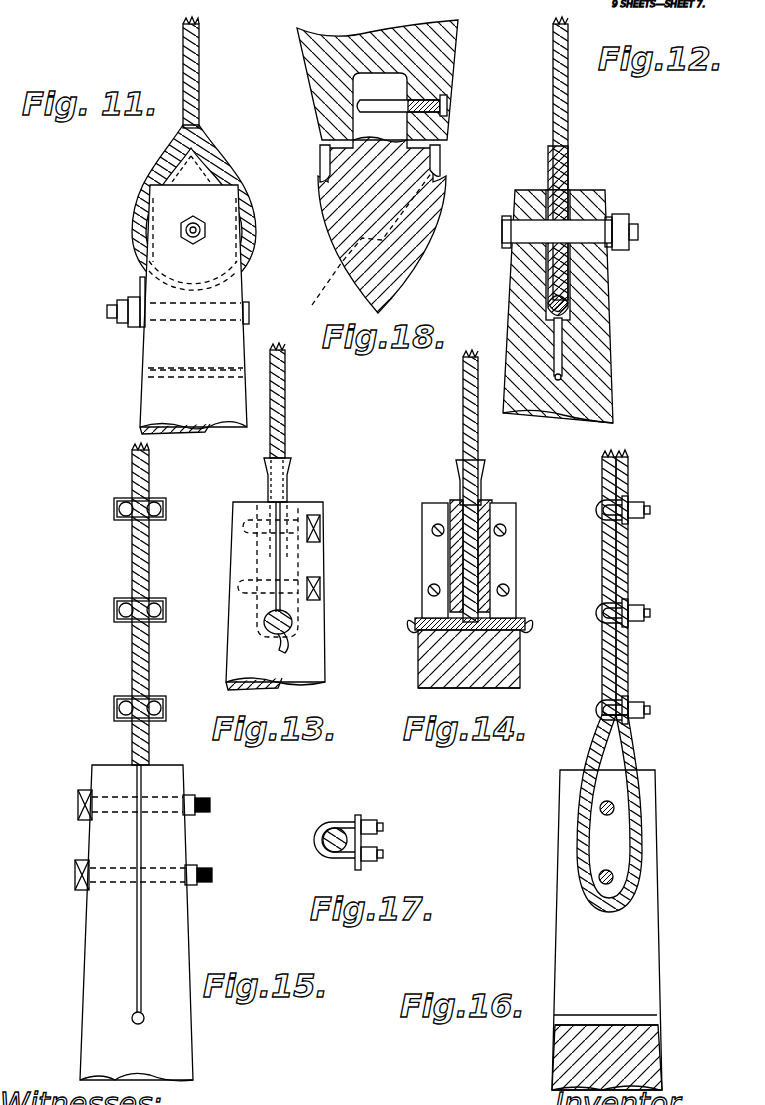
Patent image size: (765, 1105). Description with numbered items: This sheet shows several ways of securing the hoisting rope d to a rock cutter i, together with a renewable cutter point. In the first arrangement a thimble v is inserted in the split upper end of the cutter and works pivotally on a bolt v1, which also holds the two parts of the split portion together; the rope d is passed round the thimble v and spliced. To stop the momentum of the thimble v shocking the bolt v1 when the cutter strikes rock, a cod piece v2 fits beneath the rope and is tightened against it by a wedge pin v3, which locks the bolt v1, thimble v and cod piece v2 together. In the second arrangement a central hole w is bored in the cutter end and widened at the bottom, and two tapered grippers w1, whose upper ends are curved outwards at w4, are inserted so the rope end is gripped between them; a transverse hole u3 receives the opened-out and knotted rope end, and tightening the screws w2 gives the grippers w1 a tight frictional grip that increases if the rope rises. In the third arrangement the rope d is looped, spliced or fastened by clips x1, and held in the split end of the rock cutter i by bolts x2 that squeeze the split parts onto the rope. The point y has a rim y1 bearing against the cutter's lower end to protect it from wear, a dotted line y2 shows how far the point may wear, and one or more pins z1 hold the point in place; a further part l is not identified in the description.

In FIG. 11, the hoisting rope d is at (199, 62).
In FIG. 12, the hoisting rope d is at (568, 105).
In FIG. 13, the hoisting rope d is at (285, 410).
In FIG. 15, the hoisting rope d is at (132, 650).
In FIG. 17, the hoisting rope d is at (362, 840).
In FIG. 16, the hoisting rope d is at (610, 572).
In FIG. 11, the thimble v is at (185, 170).
In FIG. 12, the thimble v is at (570, 172).
In FIG. 11, the bolt v1 is at (182, 230).
In FIG. 12, the bolt v1 is at (580, 234).
In FIG. 11, the cod piece v2 is at (140, 280).
In FIG. 12, the cod piece v2 is at (565, 303).
In FIG. 11, the wedge pin v3 is at (249, 308).
In FIG. 12, the wedge pin v3 is at (565, 320).
In FIG. 11, the transverse hole u3 is at (142, 368).
In FIG. 12, the transverse hole u3 is at (570, 380).
In FIG. 14, the transverse hole u3 is at (505, 640).
In FIG. 15, the transverse hole u3 is at (143, 1022).
In FIG. 18, the rock cutter i is at (435, 46).
In FIG. 13, the rock cutter i is at (305, 660).
In FIG. 15, the rock cutter i is at (105, 970).
In FIG. 16, the rock cutter i is at (640, 1045).
In FIG. 18, the pin z1 is at (447, 107).
In FIG. 18, the extension or rim y1 is at (320, 163).
In FIG. 18, the point y is at (420, 245).
In FIG. 18, the dotted line y2 is at (342, 280).
In FIG. 13, the curved upper end of gripper w4 is at (292, 470).
In FIG. 14, the curved upper end of gripper w4 is at (482, 470).
In FIG. 13, the screws w2 is at (320, 527).
In FIG. 14, the screws w2 is at (400, 525).
In FIG. 13, the tapered grippers w1 is at (249, 565).
In FIG. 14, the tapered grippers w1 is at (400, 560).
In FIG. 13, the central hole w is at (300, 623).
In FIG. 14, the central hole w is at (495, 622).
In FIG. 14, the base l is at (495, 682).
In FIG. 15, the clips x1 is at (114, 510).
In FIG. 17, the clips x1 is at (316, 838).
In FIG. 16, the clips x1 is at (650, 512).
In FIG. 15, the bolts x2 is at (75, 872).
In FIG. 16, the bolts x2 is at (610, 876).